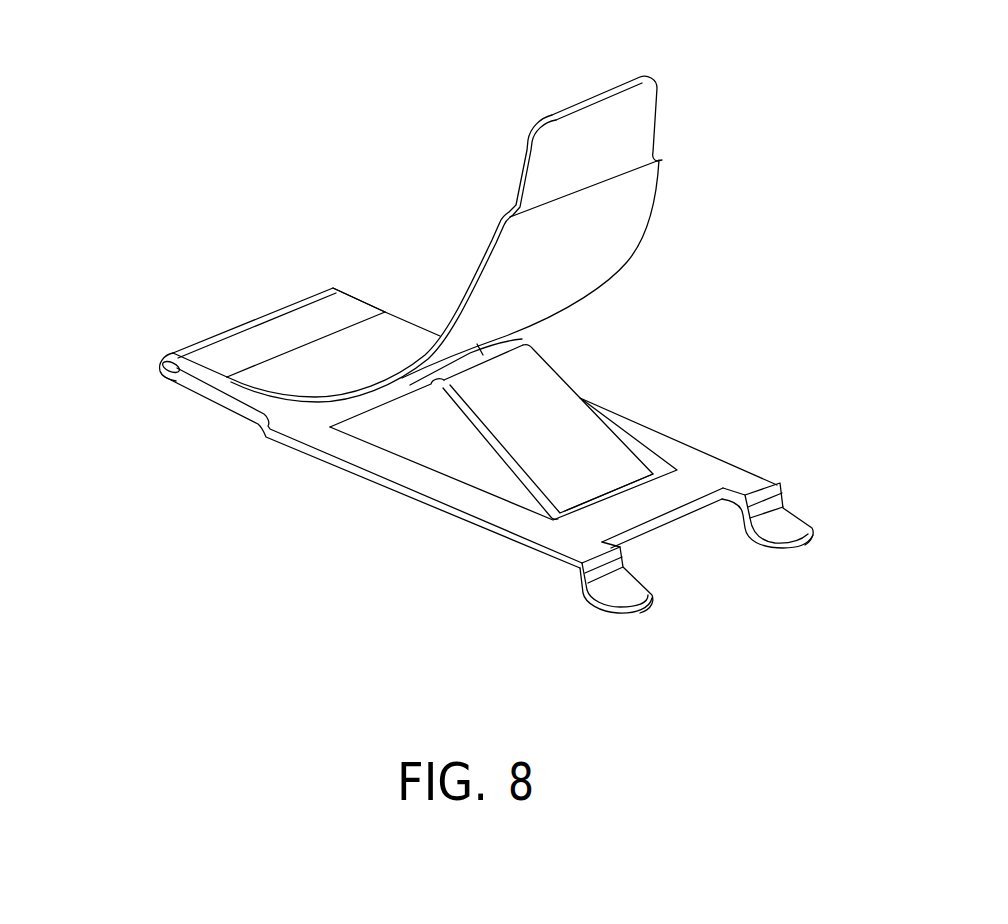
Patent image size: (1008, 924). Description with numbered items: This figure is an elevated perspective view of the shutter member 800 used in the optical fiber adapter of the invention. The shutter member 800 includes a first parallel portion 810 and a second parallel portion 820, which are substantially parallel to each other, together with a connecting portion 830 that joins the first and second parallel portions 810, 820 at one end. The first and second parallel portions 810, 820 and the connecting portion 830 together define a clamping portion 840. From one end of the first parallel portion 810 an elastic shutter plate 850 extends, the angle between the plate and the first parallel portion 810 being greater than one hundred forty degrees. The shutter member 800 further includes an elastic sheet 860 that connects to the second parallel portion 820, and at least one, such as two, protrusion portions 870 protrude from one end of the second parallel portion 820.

The shutter member 800 is at (256, 81).
The first parallel portion 810 is at (346, 302).
The second parallel portion 820 is at (183, 386).
The connecting portion 830 is at (166, 364).
The clamping portion 840 is at (168, 370).
The elastic shutter plate 850 is at (627, 205).
The elastic sheet 860 is at (555, 390).
The protrusion portions 870 is at (795, 528).